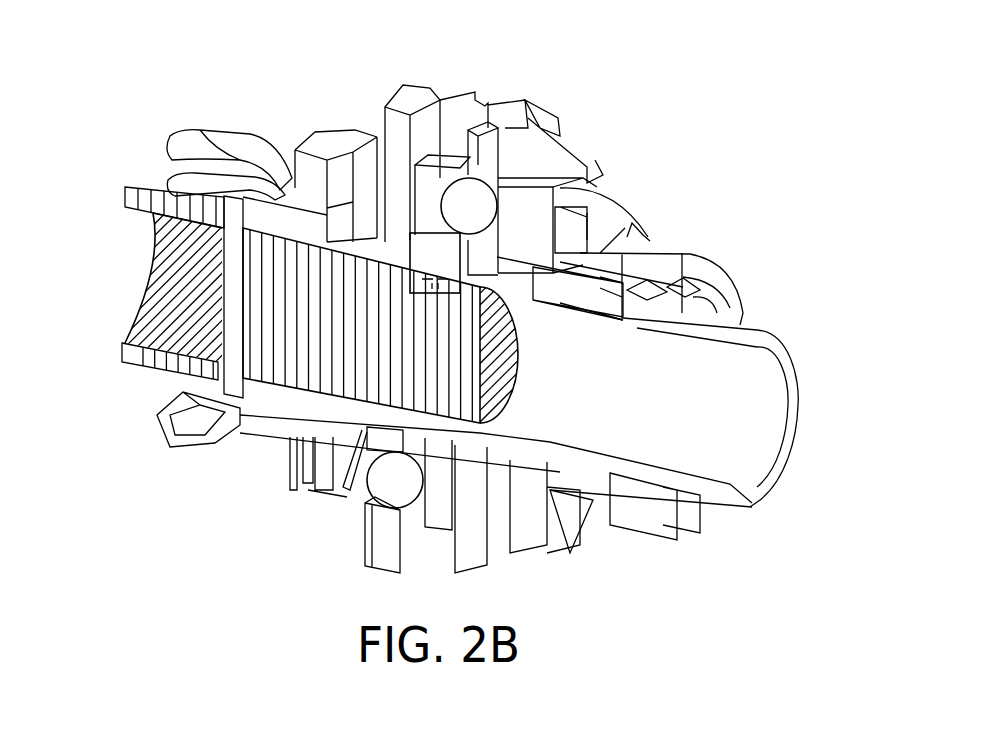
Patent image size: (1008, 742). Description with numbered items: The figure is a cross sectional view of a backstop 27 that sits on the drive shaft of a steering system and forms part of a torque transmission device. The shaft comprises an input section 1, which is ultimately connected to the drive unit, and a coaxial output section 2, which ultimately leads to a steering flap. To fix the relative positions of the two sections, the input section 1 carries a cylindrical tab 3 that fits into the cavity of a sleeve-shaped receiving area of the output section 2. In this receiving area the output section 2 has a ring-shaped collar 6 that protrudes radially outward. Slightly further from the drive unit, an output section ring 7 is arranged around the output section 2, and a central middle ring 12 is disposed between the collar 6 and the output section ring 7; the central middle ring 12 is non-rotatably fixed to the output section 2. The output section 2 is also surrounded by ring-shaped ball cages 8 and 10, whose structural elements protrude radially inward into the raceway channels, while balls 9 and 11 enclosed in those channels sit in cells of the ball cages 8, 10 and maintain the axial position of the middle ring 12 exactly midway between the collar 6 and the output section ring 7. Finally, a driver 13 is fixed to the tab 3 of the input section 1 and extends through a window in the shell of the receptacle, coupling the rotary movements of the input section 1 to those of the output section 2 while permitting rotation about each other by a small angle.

The input section 1 is at (150, 313).
The output section 2 is at (778, 380).
The cylindrical tab 3 is at (352, 331).
The ring-shaped collar 6 is at (357, 138).
The output section ring 7 is at (528, 229).
The ball cage 8 is at (527, 562).
The ball 9 is at (476, 212).
The ball cage 10 is at (342, 535).
The ball 11 is at (406, 486).
The central middle ring 12 is at (438, 512).
The driver 13 is at (448, 274).
The backstop 27 is at (703, 91).